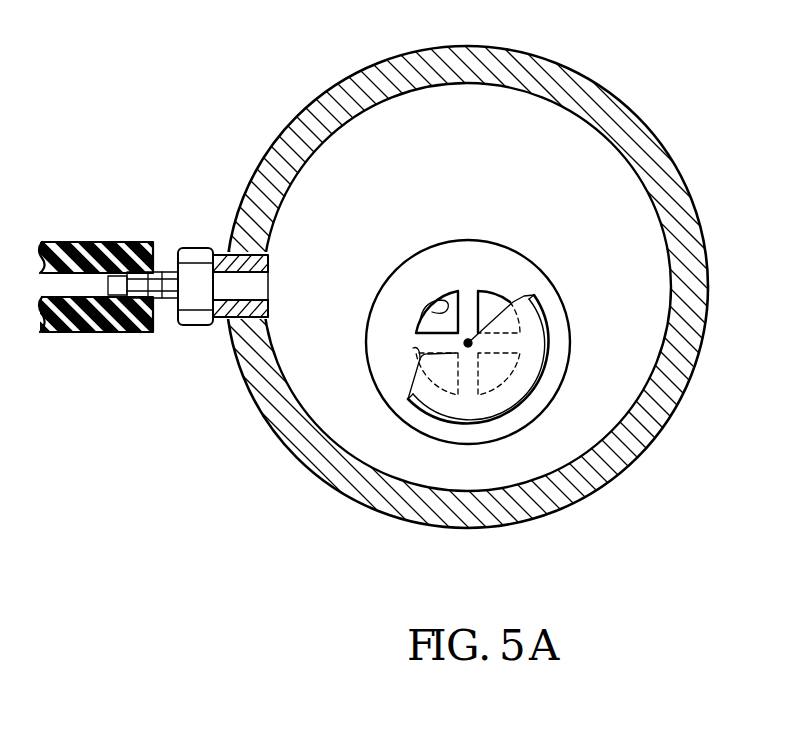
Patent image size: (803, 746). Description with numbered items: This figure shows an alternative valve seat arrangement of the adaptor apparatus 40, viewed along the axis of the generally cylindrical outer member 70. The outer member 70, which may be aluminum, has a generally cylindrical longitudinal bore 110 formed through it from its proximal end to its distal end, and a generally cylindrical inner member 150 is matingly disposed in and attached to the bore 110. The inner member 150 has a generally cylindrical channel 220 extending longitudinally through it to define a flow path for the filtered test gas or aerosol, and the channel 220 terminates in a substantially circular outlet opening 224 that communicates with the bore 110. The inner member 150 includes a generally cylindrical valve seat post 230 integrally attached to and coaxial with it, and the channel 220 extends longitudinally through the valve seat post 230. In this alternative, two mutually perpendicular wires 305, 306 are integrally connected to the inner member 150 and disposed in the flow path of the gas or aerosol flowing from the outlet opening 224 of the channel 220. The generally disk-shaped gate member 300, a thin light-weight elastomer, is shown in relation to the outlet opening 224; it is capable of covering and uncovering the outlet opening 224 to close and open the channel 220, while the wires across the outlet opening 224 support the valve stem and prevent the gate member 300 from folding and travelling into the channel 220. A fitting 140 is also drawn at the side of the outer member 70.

The adaptor apparatus 40 is at (336, 59).
The outer member 70 is at (632, 122).
The longitudinal bore 110 is at (332, 145).
The fitting 140 is at (258, 280).
The inner member 150 is at (636, 206).
The channel 220 is at (423, 314).
The outlet opening 224 is at (413, 348).
The valve seat post 230 is at (562, 302).
The gate member 300 is at (545, 383).
The wire 305 is at (500, 284).
The wire 306 is at (428, 338).